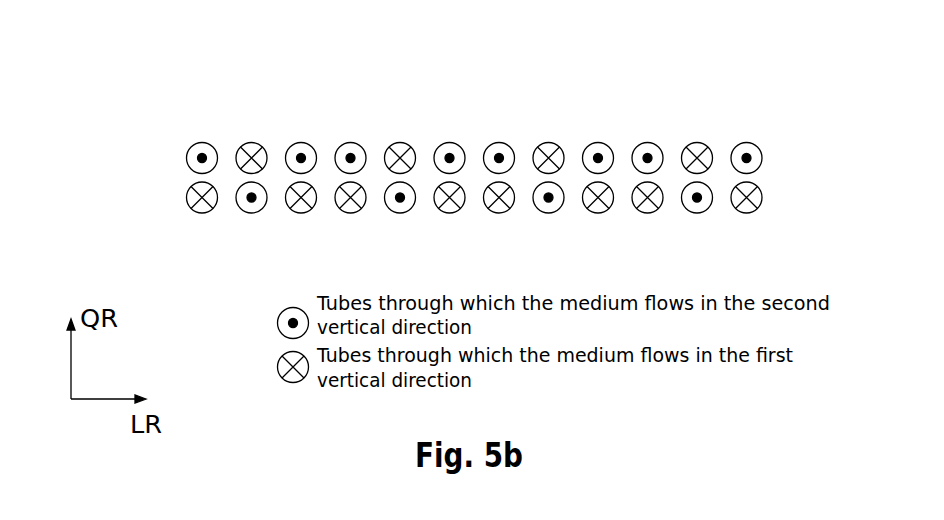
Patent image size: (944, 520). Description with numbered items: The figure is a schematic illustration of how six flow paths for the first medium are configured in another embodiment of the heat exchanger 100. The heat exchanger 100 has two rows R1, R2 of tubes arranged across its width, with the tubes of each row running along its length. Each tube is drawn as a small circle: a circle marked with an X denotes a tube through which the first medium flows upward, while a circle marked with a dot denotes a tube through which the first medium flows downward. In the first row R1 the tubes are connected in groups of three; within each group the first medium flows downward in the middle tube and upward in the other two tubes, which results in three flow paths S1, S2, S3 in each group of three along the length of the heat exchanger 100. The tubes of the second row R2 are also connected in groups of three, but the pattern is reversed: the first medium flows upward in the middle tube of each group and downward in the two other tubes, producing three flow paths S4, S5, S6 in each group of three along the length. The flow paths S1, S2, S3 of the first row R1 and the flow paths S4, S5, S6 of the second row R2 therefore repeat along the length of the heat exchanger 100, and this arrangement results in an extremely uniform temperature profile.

The heat exchanger 100 is at (140, 70).
The first row R1 is at (509, 223).
The second row R2 is at (518, 122).
The flow path S1 is at (200, 213).
The flow path S2 is at (250, 213).
The flow path S3 is at (299, 213).
The flow path S4 is at (303, 142).
The flow path S5 is at (254, 142).
The flow path S6 is at (204, 142).